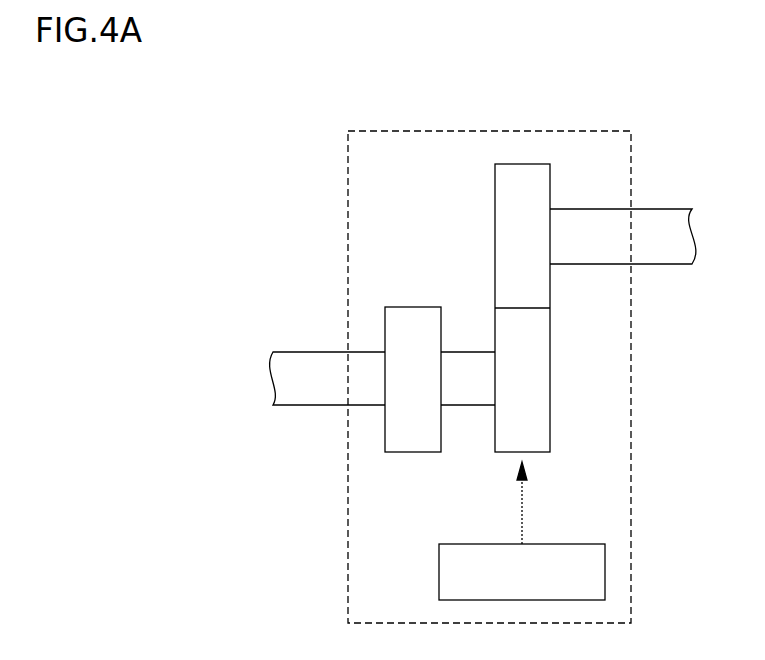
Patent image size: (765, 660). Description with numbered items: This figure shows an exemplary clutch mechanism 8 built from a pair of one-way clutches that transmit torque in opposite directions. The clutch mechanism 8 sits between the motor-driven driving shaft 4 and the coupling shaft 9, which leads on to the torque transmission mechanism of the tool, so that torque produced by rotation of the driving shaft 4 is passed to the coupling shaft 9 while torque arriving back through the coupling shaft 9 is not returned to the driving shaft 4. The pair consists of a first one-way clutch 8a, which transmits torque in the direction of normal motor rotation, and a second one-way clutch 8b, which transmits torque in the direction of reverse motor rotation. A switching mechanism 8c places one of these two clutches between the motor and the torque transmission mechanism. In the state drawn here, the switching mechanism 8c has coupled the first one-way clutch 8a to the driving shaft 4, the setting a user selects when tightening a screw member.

The clutch mechanism 8 is at (603, 131).
The first one-way clutch 8a is at (503, 443).
The second one-way clutch 8b is at (413, 443).
The switching mechanism 8c is at (567, 543).
The driving shaft 4 is at (662, 207).
The coupling shaft 9 is at (305, 373).